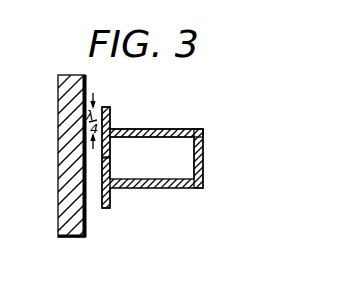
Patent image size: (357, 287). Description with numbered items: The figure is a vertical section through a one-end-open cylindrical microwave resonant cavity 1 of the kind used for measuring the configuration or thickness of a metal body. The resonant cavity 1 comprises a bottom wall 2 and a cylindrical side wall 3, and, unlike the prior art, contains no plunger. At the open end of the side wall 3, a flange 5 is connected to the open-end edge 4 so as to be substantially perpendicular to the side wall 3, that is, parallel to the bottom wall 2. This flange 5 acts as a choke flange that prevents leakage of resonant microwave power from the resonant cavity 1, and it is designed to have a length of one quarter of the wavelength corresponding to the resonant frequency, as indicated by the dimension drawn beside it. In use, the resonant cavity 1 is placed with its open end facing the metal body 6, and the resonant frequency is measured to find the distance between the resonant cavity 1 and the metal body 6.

The one-end-open cylindrical resonant cavity 1 is at (169, 190).
The bottom wall 2 is at (204, 157).
The side wall 3 is at (165, 134).
The open-end edge 4 is at (104, 150).
The flange 5 is at (110, 193).
The metal body 6 is at (80, 237).